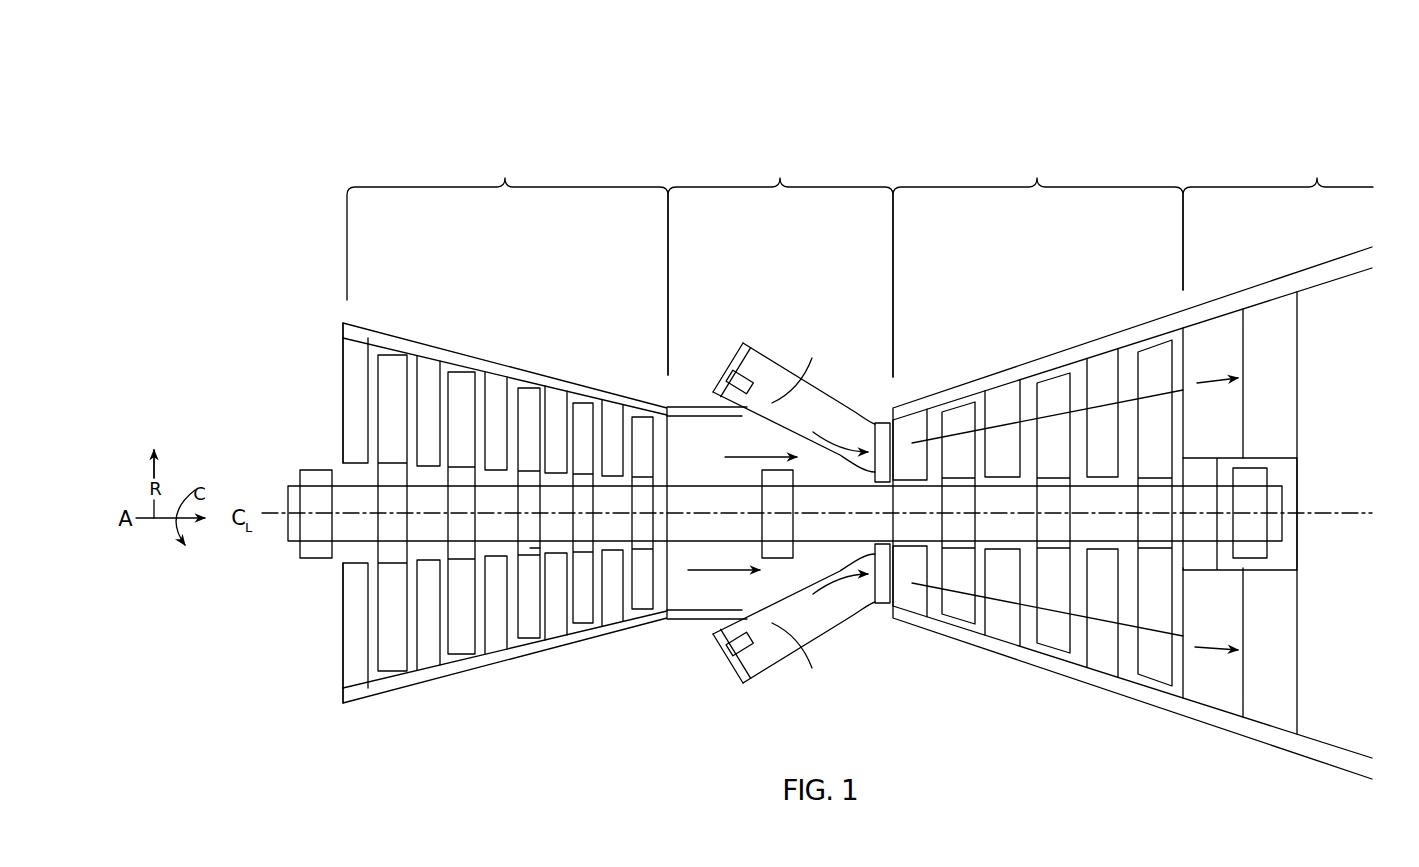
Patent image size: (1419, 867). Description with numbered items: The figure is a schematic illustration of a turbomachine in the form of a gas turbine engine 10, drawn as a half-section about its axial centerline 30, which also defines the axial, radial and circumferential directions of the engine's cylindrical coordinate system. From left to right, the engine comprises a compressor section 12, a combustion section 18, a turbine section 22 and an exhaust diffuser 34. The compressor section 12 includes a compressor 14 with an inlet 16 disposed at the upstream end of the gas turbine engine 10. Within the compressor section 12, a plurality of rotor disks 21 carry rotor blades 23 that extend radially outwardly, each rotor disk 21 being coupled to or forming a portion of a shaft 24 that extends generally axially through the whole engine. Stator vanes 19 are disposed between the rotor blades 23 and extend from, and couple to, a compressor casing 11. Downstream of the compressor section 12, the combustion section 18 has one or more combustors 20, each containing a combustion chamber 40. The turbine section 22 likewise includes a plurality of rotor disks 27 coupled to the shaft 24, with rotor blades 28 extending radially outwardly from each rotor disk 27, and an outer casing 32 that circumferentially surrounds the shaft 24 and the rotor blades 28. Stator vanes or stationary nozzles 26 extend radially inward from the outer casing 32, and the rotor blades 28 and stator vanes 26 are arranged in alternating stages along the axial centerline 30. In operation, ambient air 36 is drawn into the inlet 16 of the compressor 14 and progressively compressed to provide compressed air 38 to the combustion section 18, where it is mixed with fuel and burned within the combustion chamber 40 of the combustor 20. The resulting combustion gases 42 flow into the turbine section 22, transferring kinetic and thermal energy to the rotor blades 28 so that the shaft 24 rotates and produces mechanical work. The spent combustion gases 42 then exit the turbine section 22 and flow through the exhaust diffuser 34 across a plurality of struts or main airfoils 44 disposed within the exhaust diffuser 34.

The gas turbine engine 10 is at (1122, 136).
The compressor casing 11 is at (645, 611).
The compressor section 12 is at (507, 261).
The compressor 14 is at (408, 676).
The inlet 16 is at (340, 378).
The combustion section 18 is at (780, 262).
The stator vanes 19 is at (427, 653).
The combustor 20 is at (758, 350).
The rotor disks 21 is at (530, 548).
The turbine section 22 is at (1038, 262).
The rotor blades 23 is at (527, 623).
The shaft 24 is at (684, 493).
The stator vanes 26 is at (1000, 397).
The rotor disks 27 is at (958, 545).
The rotor blades 28 is at (1055, 643).
The axial centerline 30 is at (282, 511).
The outer casing 32 is at (1088, 688).
The exhaust diffuser 34 is at (1278, 218).
The ambient air 36 is at (323, 407).
The compressed air 38 is at (767, 455).
The combustion chamber 40 is at (798, 513).
The combustion gases 42 is at (833, 444).
The struts 44 is at (1280, 363).